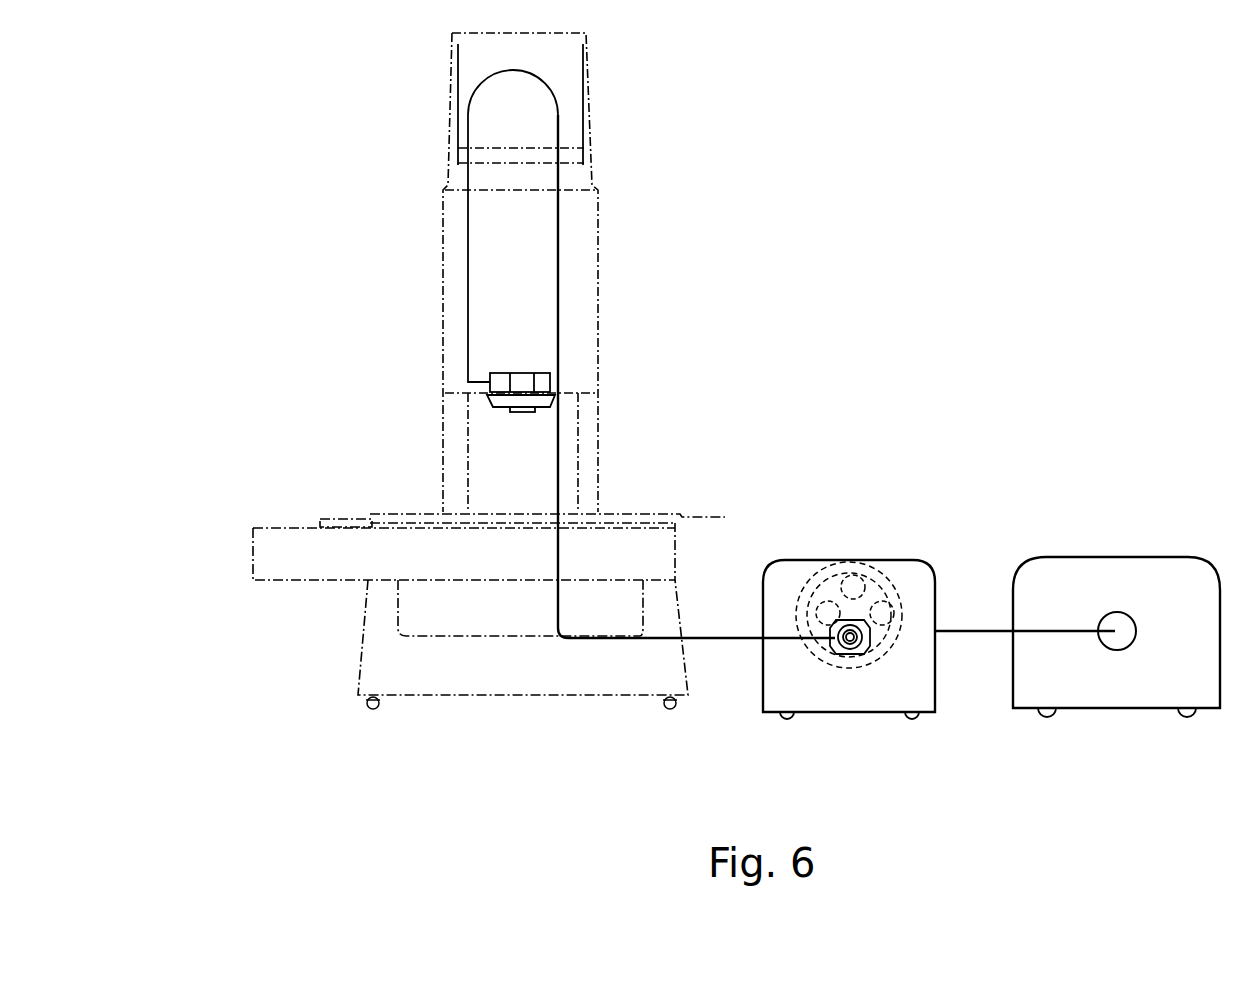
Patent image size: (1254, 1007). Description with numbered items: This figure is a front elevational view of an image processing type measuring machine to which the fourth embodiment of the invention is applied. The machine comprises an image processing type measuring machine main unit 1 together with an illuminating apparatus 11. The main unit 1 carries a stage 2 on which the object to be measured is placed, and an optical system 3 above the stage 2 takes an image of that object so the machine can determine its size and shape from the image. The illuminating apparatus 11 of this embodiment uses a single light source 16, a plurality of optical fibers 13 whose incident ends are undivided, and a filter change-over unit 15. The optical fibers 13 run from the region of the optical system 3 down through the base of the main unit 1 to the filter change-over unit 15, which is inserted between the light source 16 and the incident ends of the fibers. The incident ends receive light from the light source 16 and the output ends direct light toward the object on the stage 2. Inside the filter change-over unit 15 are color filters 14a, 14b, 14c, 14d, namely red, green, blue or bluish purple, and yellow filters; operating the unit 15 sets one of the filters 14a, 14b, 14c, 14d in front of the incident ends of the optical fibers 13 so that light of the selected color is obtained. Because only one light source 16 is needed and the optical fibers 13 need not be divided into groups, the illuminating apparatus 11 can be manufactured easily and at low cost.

The image processing type measuring machine main unit 1 is at (345, 216).
The stage 2 is at (373, 515).
The optical system 3 is at (455, 283).
The illuminating apparatus 11 is at (1003, 372).
The optical fibers 13 is at (560, 290).
The filter 14a is at (823, 663).
The filter 14b is at (810, 587).
The filter 14c is at (866, 556).
The filter 14d is at (897, 591).
The filter change-over unit 15 is at (922, 558).
The light source 16 is at (1148, 556).